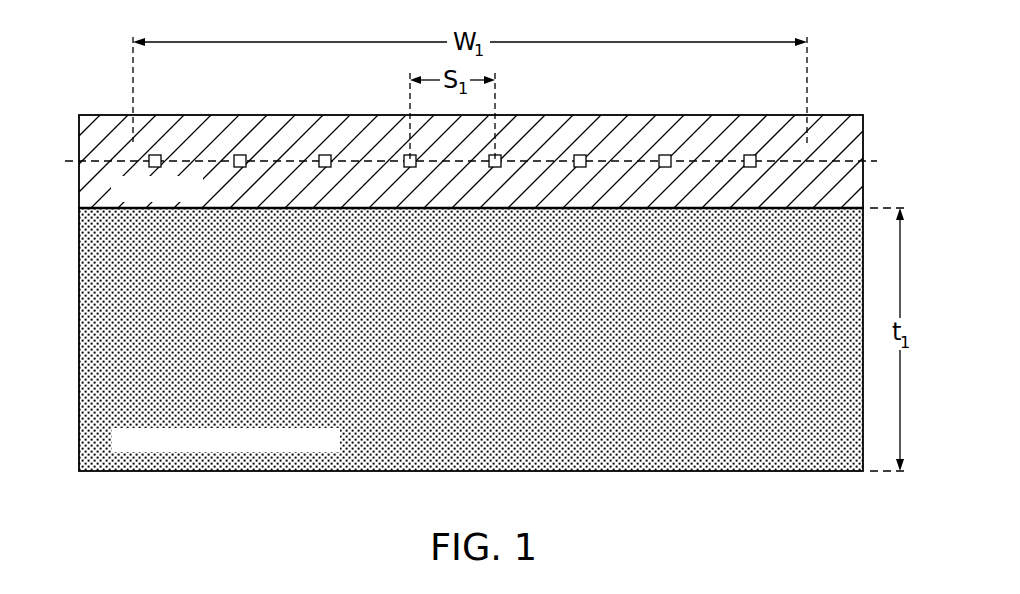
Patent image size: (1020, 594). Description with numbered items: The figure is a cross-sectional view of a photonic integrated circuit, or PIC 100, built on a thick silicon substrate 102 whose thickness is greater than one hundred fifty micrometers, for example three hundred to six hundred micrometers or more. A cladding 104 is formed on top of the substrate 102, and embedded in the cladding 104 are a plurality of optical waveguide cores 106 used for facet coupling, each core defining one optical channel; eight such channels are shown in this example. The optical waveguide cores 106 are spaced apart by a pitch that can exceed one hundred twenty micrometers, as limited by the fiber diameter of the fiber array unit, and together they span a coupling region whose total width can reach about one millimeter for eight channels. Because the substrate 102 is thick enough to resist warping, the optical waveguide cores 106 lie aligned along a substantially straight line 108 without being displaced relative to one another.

The PIC 100 is at (838, 56).
The silicon substrate 102 is at (79, 344).
The cladding 104 is at (100, 115).
The optical waveguide cores 106 is at (322, 153).
The line 108 is at (100, 160).